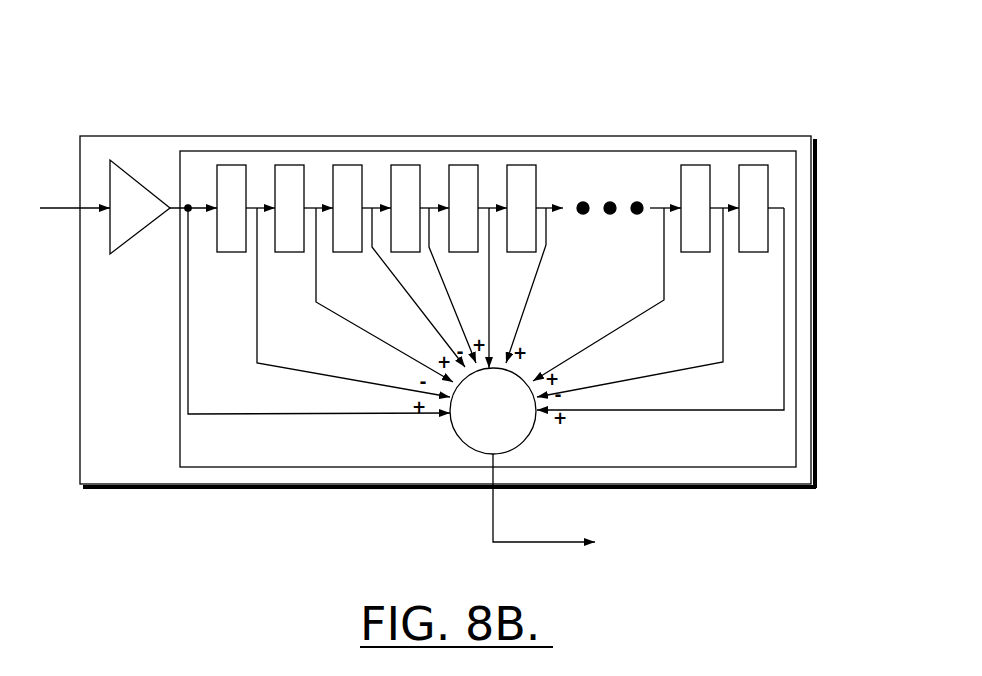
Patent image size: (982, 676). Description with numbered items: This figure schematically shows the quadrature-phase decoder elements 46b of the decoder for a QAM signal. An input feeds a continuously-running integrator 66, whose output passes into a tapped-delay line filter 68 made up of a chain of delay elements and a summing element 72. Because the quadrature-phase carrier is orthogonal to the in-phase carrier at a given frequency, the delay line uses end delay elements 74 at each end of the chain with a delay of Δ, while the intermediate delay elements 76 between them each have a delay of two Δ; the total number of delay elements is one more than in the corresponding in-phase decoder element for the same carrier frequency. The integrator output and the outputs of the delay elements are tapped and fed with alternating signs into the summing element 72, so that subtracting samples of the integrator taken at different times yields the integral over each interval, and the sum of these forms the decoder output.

The quadrature-phase decoder elements 46b is at (445, 254).
The continuously-running integrator 66 is at (99, 228).
The tapped-delay line filter 68 is at (488, 313).
The summing element 72 is at (460, 445).
The end delay elements 74 is at (469, 178).
The intermediate delay elements 76 is at (470, 178).